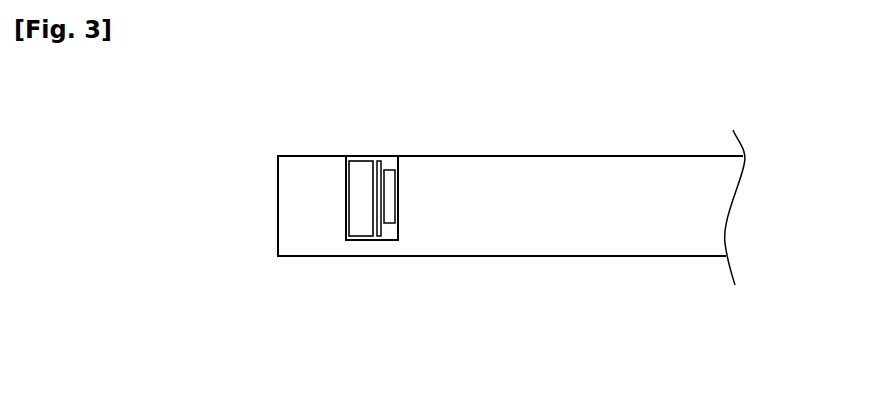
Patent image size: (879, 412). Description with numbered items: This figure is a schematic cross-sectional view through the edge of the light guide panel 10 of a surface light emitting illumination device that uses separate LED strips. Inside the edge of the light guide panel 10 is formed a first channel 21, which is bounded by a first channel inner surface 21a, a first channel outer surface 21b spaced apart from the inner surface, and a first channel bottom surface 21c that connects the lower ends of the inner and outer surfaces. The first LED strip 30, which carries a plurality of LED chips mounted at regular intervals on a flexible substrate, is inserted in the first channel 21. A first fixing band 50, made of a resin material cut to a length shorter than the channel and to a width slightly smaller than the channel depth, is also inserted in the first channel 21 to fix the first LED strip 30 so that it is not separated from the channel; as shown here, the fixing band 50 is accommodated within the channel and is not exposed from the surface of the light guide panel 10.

The light guide panel 10 is at (545, 176).
The first channel 21 is at (537, 344).
The first channel inner surface 21a is at (398, 211).
The first channel outer surface 21b is at (346, 211).
The first channel bottom surface 21c is at (371, 241).
The first LED strip 30 is at (385, 171).
The first fixing band 50 is at (359, 174).